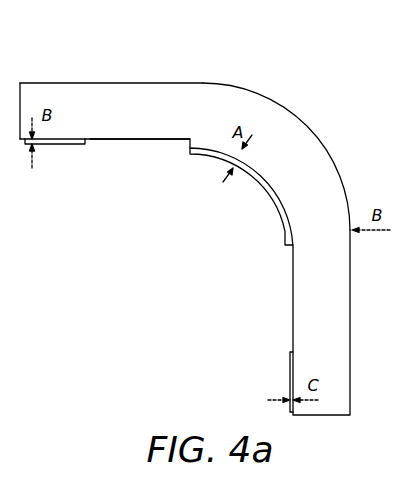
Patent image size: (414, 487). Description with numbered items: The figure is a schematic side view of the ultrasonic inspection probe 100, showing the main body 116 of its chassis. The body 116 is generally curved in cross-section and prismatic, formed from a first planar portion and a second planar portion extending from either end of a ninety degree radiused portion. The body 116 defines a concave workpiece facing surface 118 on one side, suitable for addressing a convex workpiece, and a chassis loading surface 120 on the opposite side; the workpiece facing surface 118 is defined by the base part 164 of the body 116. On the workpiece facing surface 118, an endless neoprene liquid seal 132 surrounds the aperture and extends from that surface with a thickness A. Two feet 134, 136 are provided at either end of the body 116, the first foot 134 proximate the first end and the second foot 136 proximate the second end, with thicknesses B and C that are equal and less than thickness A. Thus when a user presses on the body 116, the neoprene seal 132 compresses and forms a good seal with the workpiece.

The ultrasonic inspection probe 100 is at (270, 69).
The body 116 is at (98, 83).
The chassis loading surface 120 is at (167, 83).
The workpiece facing surface 118 is at (138, 142).
The base part 164 is at (140, 126).
The liquid seal 132 is at (268, 201).
The first foot 134 is at (66, 145).
The second foot 136 is at (290, 357).